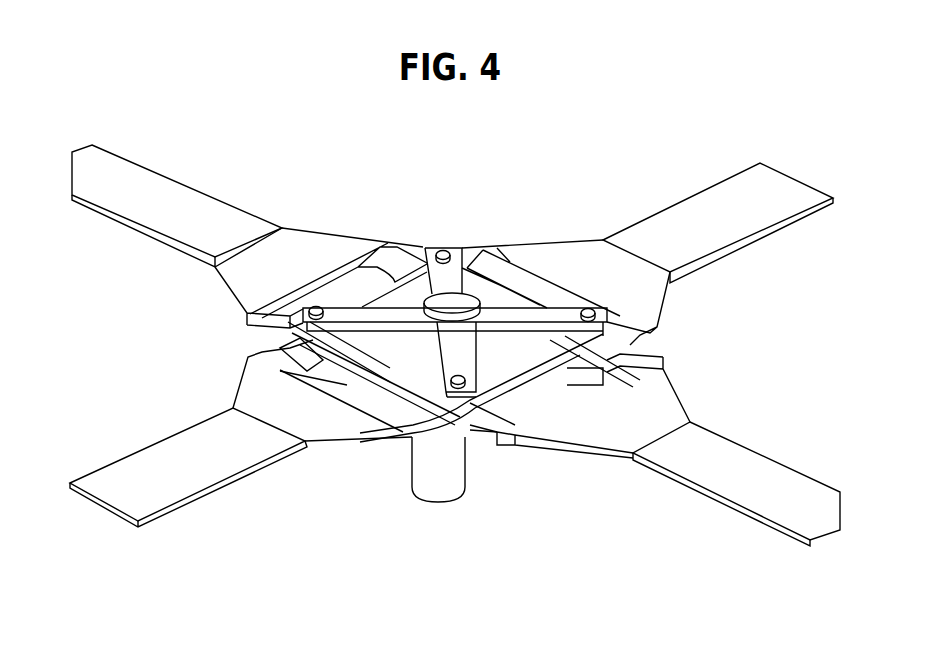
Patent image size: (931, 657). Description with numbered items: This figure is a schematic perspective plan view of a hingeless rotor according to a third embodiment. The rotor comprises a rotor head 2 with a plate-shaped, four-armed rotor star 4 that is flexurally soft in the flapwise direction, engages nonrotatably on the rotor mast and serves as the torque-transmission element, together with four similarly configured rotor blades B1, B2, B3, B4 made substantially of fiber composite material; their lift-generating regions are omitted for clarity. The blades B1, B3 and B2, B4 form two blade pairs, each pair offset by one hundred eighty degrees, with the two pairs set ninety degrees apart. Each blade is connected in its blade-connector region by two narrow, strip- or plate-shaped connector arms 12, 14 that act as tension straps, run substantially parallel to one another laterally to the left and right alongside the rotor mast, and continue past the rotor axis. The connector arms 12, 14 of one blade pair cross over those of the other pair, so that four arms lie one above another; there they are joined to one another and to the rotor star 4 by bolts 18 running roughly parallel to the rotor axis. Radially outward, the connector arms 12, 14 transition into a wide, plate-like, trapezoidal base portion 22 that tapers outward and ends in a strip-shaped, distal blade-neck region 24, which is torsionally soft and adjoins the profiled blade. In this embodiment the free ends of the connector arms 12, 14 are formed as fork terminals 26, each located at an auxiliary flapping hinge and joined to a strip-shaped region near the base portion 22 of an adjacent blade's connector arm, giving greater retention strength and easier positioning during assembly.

The rotor head 2 is at (543, 171).
The rotor star 4 is at (453, 268).
The connector arm 12 is at (575, 340).
The connector arm 14 is at (383, 392).
The bolt 18 is at (315, 306).
The base portion 22 is at (667, 404).
The blade-neck region 24 is at (747, 470).
The fork terminal 26 is at (293, 345).
The rotor blade B1 is at (775, 503).
The rotor blade B2 is at (160, 513).
The rotor blade B3 is at (78, 201).
The rotor blade B4 is at (822, 205).